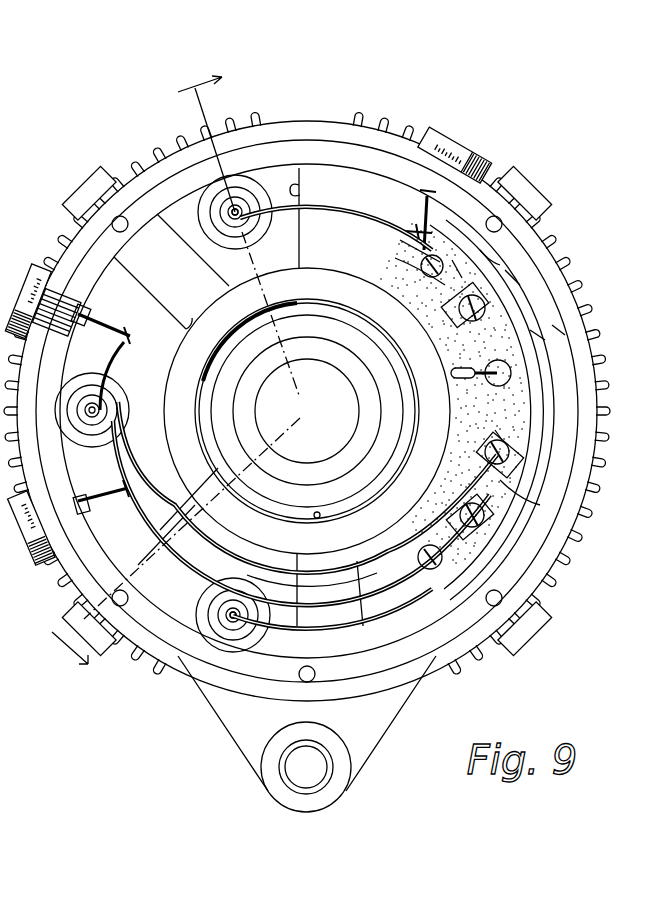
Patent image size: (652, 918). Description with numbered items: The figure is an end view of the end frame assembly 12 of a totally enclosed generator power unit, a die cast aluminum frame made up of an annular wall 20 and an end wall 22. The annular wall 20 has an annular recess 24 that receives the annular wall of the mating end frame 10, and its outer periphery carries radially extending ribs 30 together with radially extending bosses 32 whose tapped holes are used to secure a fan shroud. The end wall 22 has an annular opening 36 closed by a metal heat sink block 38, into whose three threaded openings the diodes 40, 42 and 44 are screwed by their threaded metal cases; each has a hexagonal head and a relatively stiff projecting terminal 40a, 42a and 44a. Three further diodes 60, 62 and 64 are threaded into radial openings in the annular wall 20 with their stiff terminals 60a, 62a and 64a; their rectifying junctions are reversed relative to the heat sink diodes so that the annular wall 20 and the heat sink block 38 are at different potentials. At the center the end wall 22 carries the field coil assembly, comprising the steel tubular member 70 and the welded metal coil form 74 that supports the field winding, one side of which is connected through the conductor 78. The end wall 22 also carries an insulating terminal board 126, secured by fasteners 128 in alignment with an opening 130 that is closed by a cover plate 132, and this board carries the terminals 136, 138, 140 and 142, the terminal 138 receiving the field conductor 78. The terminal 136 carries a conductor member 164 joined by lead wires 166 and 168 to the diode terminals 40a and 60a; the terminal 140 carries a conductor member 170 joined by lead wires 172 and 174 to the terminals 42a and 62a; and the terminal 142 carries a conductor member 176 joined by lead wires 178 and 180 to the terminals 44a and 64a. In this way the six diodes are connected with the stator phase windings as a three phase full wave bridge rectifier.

The end frame 10 is at (200, 80).
The end frame assembly 12 is at (222, 728).
The annular wall 20 is at (332, 113).
The end wall 22 is at (493, 255).
The annular recess 24 is at (166, 666).
The radially extending ribs 30 is at (152, 150).
The radially extending bosses 32 is at (86, 192).
The annular opening 36 is at (303, 188).
The heat sink block 38 is at (278, 170).
The diode 40 is at (247, 222).
The terminal 40a is at (236, 218).
The diode 42 is at (92, 430).
The terminal 42a is at (94, 400).
The diode 44 is at (210, 612).
The terminal 44a is at (250, 622).
The diode 60 is at (448, 132).
The terminal 60a is at (420, 217).
The diode 62 is at (44, 262).
The terminal 62a is at (110, 326).
The diode 64 is at (20, 522).
The terminal 64a is at (110, 502).
The tubular member 70 is at (316, 516).
The metal coil form 74 is at (318, 272).
The conductor 78 is at (496, 362).
The terminal board 126 is at (513, 327).
The fasteners 128 is at (433, 262).
The opening 130 is at (490, 255).
The cover plate 132 is at (537, 335).
The terminal 136 is at (515, 278).
The terminal 138 is at (558, 332).
The terminal 140 is at (522, 448).
The terminal 142 is at (482, 522).
The conductor member 164 is at (452, 340).
The lead wire 166 is at (384, 232).
The lead wire 168 is at (457, 272).
The conductor member 170 is at (500, 430).
The lead wire 172 is at (478, 475).
The lead wire 174 is at (472, 452).
The conductor member 176 is at (536, 504).
The lead wire 178 is at (356, 632).
The lead wire 180 is at (376, 607).